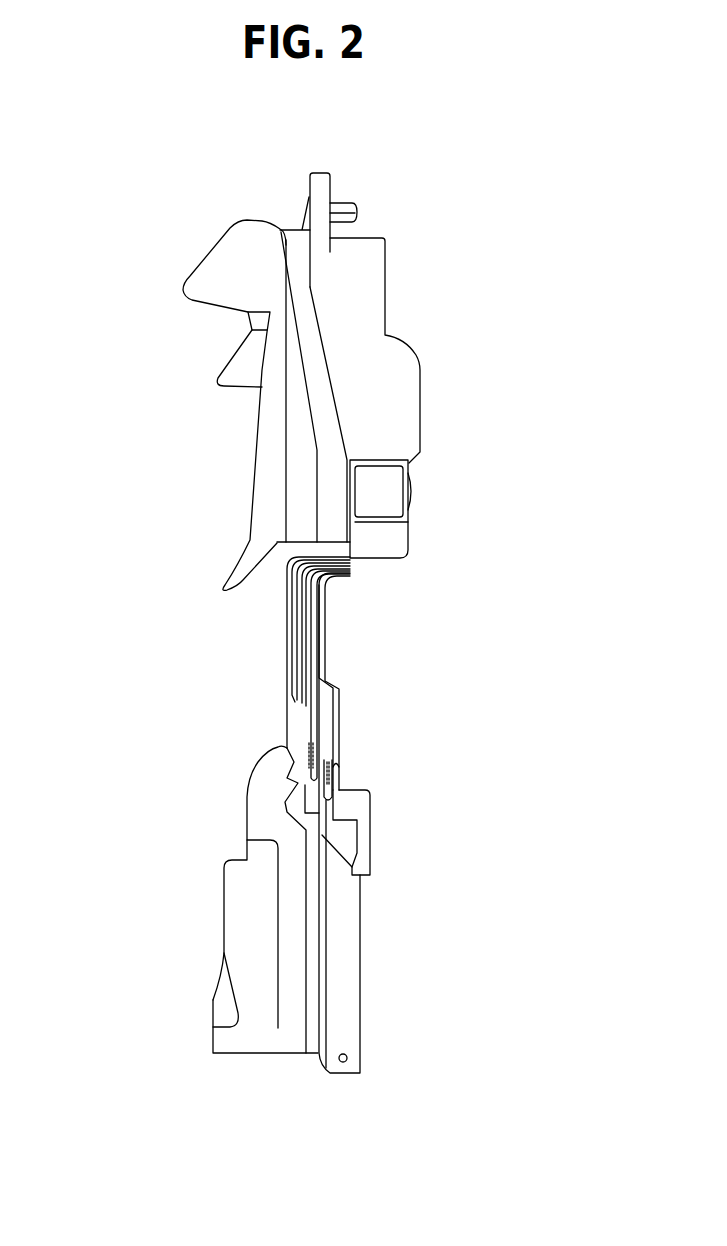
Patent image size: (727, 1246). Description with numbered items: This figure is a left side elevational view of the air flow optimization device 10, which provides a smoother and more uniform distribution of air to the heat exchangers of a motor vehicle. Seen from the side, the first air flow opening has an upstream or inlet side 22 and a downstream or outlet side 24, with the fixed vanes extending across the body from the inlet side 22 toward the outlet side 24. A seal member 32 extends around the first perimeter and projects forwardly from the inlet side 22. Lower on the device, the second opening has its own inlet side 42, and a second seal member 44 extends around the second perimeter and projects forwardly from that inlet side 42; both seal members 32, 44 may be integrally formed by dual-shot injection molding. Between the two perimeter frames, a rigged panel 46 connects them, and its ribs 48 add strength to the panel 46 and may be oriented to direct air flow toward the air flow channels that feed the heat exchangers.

The air flow optimization device 10 is at (484, 203).
The inlet side 22 is at (212, 500).
The outlet side 24 is at (418, 327).
The seal member 32 is at (208, 280).
The inlet side 42 is at (167, 988).
The second seal member 44 is at (247, 898).
The rigged panel 46 is at (322, 638).
The ribs 48 is at (288, 645).